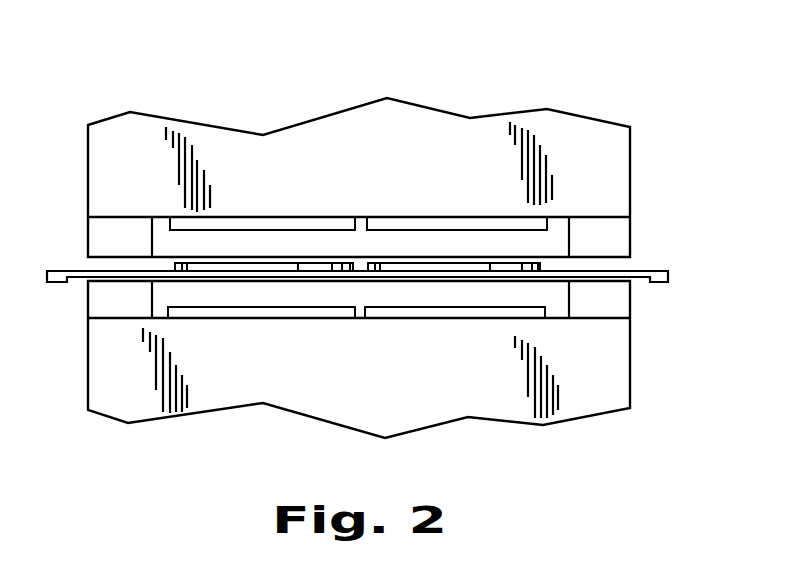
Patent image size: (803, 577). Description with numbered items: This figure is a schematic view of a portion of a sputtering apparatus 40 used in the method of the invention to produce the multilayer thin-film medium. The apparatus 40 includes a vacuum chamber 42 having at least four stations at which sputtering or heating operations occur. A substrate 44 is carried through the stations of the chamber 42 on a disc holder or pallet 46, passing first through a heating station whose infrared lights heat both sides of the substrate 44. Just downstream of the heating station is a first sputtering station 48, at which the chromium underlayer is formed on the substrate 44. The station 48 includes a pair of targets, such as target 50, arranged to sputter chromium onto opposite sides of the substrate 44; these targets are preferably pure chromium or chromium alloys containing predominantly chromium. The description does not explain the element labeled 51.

The sputtering apparatus 40 is at (427, 105).
The vacuum chamber 42 is at (642, 257).
The substrate 44 is at (467, 263).
The disc holder or pallet 46 is at (638, 280).
The first sputtering station 48 is at (455, 293).
The target 50 is at (503, 312).
The upper recess 51 is at (405, 223).